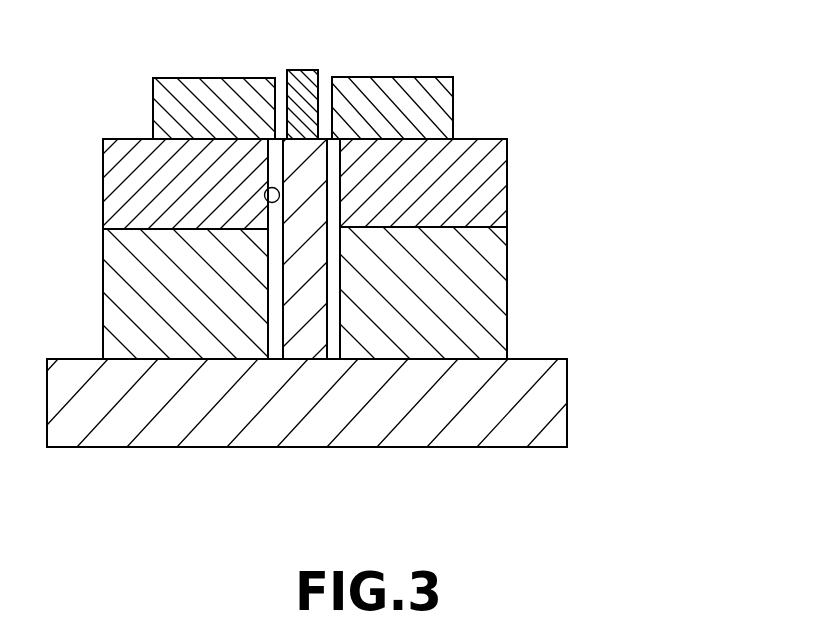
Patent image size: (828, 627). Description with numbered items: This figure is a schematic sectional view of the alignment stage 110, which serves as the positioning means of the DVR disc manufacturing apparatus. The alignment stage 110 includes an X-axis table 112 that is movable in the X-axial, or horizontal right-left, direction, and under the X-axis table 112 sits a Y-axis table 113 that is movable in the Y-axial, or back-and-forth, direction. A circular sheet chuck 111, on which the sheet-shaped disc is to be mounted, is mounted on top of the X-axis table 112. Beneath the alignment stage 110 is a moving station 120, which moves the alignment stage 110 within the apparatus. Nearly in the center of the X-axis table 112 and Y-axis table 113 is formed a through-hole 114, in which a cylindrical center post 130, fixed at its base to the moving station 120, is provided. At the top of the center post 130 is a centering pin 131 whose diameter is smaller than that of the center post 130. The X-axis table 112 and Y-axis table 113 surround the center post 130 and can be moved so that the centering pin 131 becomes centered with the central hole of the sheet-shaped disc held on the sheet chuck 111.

The alignment stage 110 is at (410, 249).
The sheet chuck 111 is at (153, 113).
The X-axis table 112 is at (507, 178).
The Y-axis table 113 is at (507, 290).
The through-hole 114 is at (265, 190).
The moving station 120 is at (567, 400).
The center post 130 is at (304, 328).
The centering pin 131 is at (299, 71).